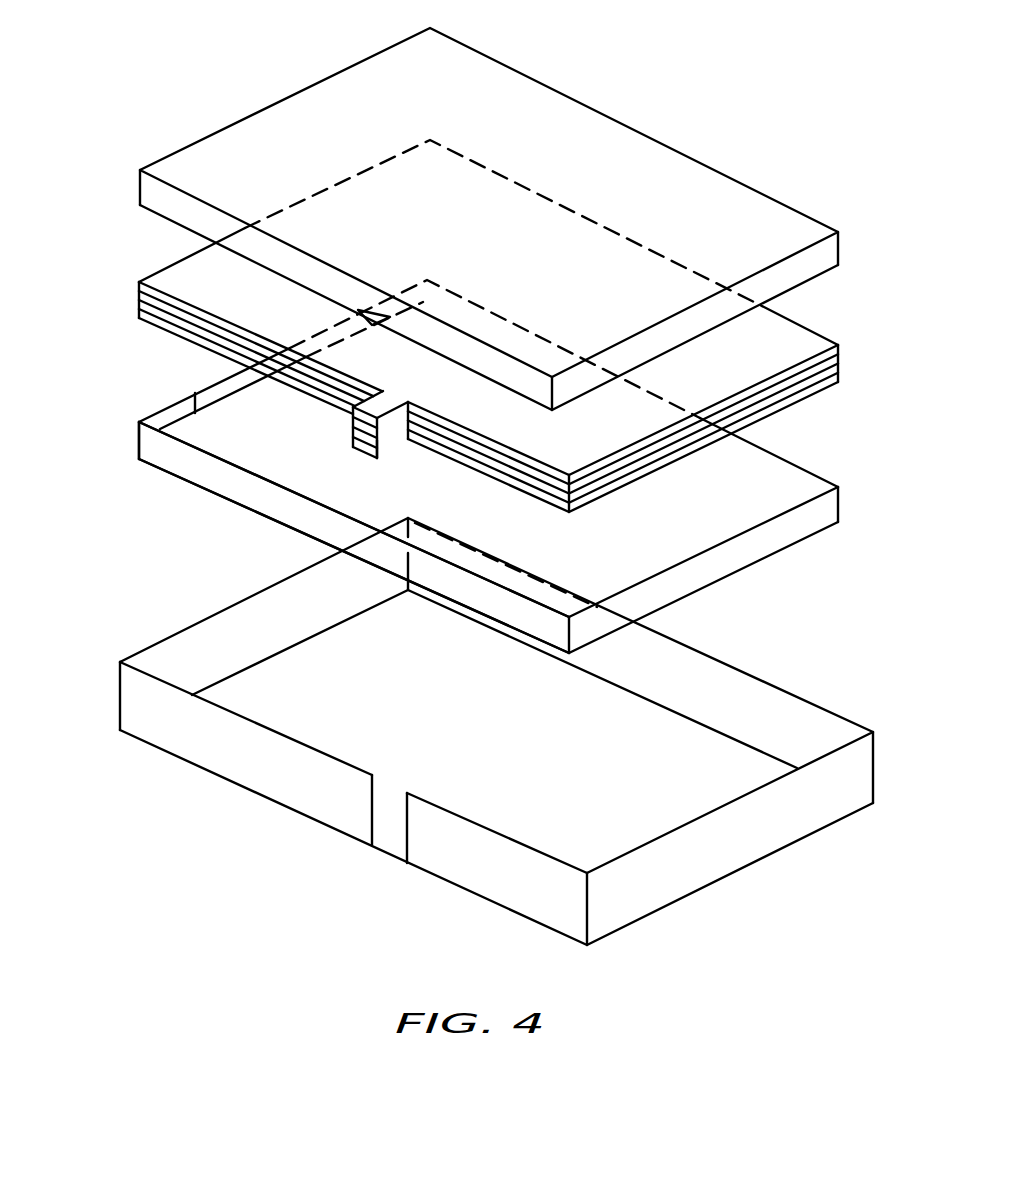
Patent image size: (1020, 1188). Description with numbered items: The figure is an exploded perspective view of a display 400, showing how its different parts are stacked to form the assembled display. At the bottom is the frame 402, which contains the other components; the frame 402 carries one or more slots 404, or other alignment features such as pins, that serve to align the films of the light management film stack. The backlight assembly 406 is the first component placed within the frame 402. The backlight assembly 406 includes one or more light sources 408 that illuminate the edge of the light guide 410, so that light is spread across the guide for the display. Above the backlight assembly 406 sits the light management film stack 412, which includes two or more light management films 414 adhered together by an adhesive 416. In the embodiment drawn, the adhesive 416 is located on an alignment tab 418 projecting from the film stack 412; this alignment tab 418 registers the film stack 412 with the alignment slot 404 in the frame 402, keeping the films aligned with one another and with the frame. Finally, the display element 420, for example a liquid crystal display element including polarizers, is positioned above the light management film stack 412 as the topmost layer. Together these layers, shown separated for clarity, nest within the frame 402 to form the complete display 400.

The display 400 is at (170, 887).
The frame 402 is at (167, 753).
The slot 404 is at (385, 855).
The backlight assembly 406 is at (752, 566).
The light source 408 is at (195, 402).
The light guide 410 is at (240, 513).
The light management film stack 412 is at (138, 300).
The light management film 414 is at (840, 370).
The adhesive 416 is at (352, 418).
The alignment tab 418 is at (378, 457).
The display element 420 is at (138, 192).